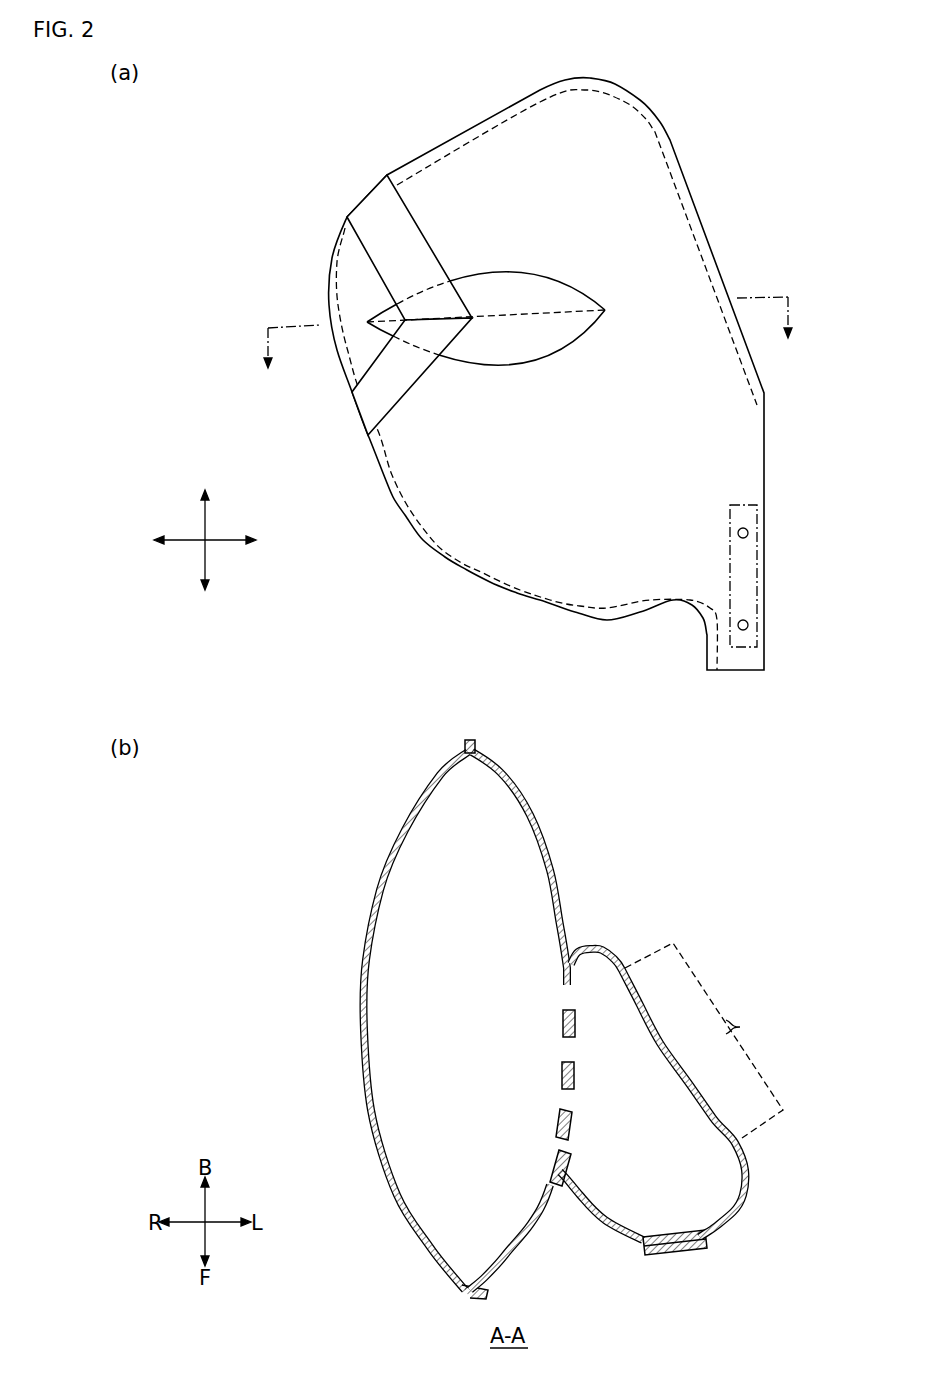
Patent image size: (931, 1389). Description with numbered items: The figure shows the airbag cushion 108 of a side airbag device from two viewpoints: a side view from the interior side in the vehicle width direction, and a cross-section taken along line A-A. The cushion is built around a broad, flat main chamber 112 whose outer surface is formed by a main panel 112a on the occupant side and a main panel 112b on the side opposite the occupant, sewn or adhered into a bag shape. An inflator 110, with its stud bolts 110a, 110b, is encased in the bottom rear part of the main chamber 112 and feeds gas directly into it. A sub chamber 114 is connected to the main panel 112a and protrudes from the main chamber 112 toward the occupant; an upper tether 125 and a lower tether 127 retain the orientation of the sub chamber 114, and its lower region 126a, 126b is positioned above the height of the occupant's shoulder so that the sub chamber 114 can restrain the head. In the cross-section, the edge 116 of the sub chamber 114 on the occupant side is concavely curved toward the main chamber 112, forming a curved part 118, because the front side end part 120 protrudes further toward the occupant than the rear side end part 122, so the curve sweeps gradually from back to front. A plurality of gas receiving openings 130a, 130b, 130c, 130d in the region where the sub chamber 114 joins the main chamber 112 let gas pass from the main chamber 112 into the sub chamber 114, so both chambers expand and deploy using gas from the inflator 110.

The airbag cushion 108 is at (292, 170).
The inflator 110 is at (785, 567).
The stud bolt 110a is at (749, 533).
The stud bolt 110b is at (749, 625).
The main chamber 112 is at (448, 163).
The main panel 112a is at (553, 877).
The main panel 112b is at (372, 880).
The sub chamber 114 is at (575, 751).
The edge 116 is at (671, 1058).
The curved part 118 is at (706, 1040).
The end part 120 is at (698, 1065).
The end part 122 is at (598, 950).
The upper tether 125 is at (370, 200).
The lower region 126a is at (478, 270).
The lower region 126b is at (497, 365).
The lower tether 127 is at (370, 407).
The gas receiving opening 130a is at (558, 1155).
The gas receiving opening 130b is at (560, 1114).
The gas receiving opening 130c is at (562, 1066).
The gas receiving opening 130d is at (563, 1012).